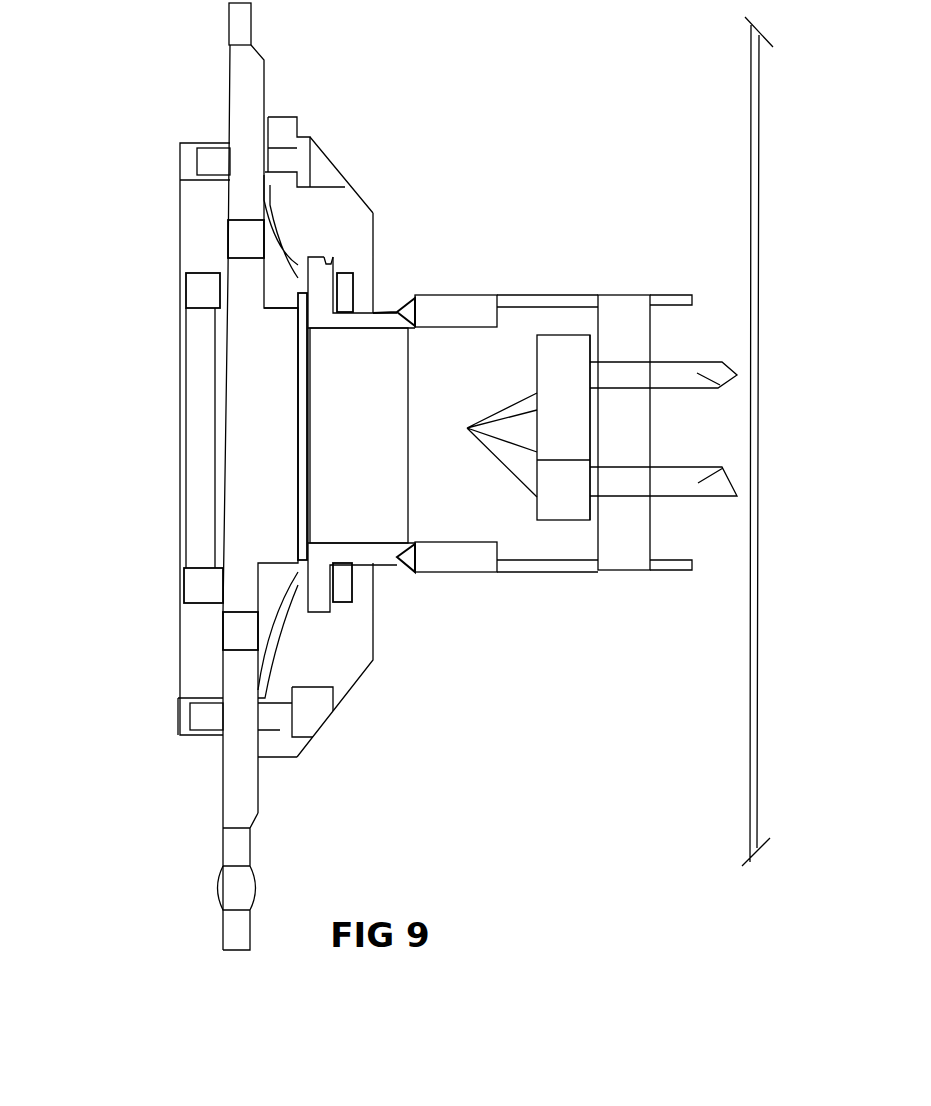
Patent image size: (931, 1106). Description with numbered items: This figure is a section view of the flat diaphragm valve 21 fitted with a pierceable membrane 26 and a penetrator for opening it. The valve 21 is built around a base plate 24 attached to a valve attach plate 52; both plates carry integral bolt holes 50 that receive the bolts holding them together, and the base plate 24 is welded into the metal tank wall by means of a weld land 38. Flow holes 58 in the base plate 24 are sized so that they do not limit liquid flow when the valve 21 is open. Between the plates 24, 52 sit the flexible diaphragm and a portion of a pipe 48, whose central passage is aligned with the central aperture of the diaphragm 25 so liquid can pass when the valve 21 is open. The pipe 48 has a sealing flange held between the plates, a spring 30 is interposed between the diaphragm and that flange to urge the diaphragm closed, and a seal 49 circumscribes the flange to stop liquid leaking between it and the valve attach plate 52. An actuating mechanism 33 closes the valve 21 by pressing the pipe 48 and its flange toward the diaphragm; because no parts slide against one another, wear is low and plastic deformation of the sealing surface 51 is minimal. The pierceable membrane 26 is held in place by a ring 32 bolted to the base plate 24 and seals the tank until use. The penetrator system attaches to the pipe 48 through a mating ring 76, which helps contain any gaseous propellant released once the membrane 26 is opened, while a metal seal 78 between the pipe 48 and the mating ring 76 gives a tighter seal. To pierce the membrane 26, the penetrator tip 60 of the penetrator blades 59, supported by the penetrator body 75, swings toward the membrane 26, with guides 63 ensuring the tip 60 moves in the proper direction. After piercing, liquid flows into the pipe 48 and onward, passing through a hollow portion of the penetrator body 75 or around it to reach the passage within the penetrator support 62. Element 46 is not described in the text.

The valve 21 is at (750, 383).
The base plate 24 is at (192, 663).
The central aperture of the diaphragm 25 is at (298, 402).
The pierceable membrane 26 is at (225, 480).
The spring 30 is at (308, 302).
The ring 32 is at (203, 300).
The actuating mechanism 33 is at (353, 293).
The weld land 38 is at (251, 12).
The spring arm 46 is at (275, 620).
The pipe 48 is at (372, 447).
The seal 49 is at (323, 262).
The bolt holes 50 is at (202, 715).
The sealing surface 51 is at (298, 294).
The valve attach plate 52 is at (287, 135).
The flow holes 58 is at (232, 638).
The penetrator blades 59 is at (483, 425).
The penetrator tip 60 is at (467, 428).
The penetrator support 62 is at (628, 305).
The guides 63 is at (658, 373).
The penetrator body 75 is at (562, 472).
The mating ring 76 is at (483, 307).
The metal seal 78 is at (398, 310).